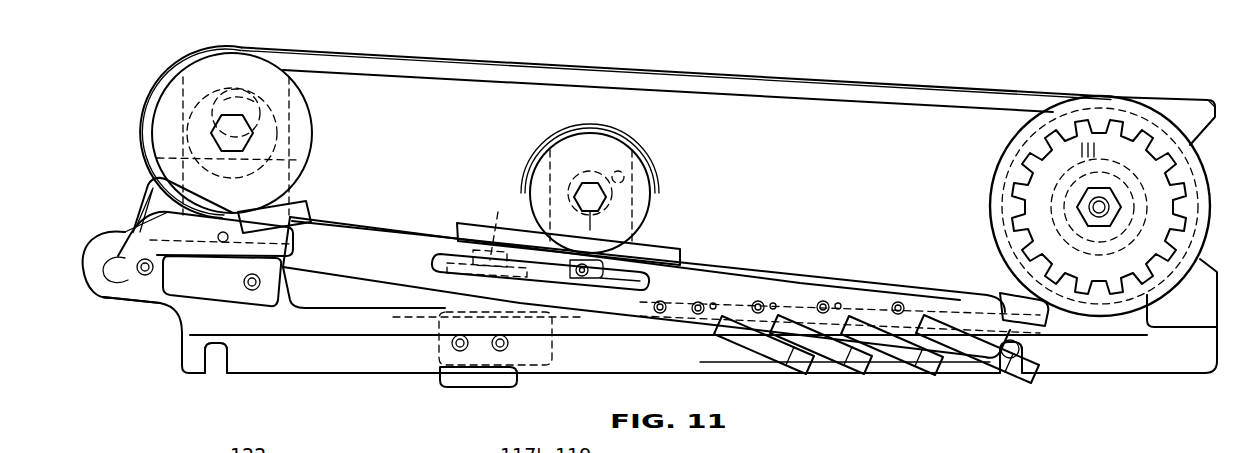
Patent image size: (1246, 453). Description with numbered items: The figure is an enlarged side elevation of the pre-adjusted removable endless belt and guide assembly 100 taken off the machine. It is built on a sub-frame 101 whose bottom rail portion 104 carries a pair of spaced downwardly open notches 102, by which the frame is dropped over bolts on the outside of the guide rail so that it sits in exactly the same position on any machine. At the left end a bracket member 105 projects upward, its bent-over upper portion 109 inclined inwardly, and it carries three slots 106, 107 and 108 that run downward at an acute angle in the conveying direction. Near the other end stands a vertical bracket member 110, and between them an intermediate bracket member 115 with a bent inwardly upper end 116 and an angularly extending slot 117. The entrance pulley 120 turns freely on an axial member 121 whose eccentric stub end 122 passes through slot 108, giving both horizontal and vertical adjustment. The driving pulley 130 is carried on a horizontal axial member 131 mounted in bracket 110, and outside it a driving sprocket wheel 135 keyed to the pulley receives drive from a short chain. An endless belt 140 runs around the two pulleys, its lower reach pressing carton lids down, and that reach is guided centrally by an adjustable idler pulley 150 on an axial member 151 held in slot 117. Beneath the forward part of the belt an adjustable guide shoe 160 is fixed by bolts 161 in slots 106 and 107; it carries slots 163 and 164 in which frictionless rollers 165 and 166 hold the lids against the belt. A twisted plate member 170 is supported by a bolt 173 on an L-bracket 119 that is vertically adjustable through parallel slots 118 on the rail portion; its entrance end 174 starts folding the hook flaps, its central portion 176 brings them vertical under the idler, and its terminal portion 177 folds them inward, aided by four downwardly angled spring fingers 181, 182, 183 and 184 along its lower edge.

The removable endless belt and guide assembly 100 is at (1215, 98).
The sub-frame 101 is at (1142, 373).
The notches 102 is at (222, 363).
The bottom rail portion 104 is at (775, 367).
The bracket member 105 is at (163, 157).
The slot 106 is at (125, 287).
The slot 107 is at (237, 310).
The slot 108 is at (245, 80).
The bent-over upper portion 109 is at (308, 100).
The vertical bracket member 110 is at (1137, 317).
The bracket member 115 is at (633, 233).
The bent inwardly upper end 116 is at (647, 147).
The angularly extending slot 117 is at (624, 177).
The parallel slots 118 is at (473, 337).
The L-bracket 119 is at (437, 293).
The pulley 120 is at (300, 163).
The axial member 121 is at (233, 157).
The eccentric stub end 122 is at (228, 90).
The driving pulley 130 is at (1127, 115).
The horizontal axial member 131 is at (1090, 212).
The driving sprocket wheel 135 is at (1023, 187).
The belt 140 is at (912, 83).
The adjustable idler pulley 150 is at (640, 203).
The axial member 151 is at (592, 210).
The adjustable guide shoe 160 is at (373, 245).
The bolts 161 is at (145, 275).
The slot 163 is at (297, 243).
The slot 164 is at (593, 287).
The frictionless roller 165 is at (222, 281).
The frictionless roller 166 is at (580, 290).
The twisted plate member 170 is at (752, 262).
The bolt 173 is at (500, 212).
The entrance end 174 is at (137, 223).
The central portion 176 is at (688, 272).
The terminal portion 177 is at (898, 290).
The spring finger 181 is at (765, 345).
The spring finger 182 is at (850, 343).
The spring finger 183 is at (915, 347).
The spring finger 184 is at (980, 343).